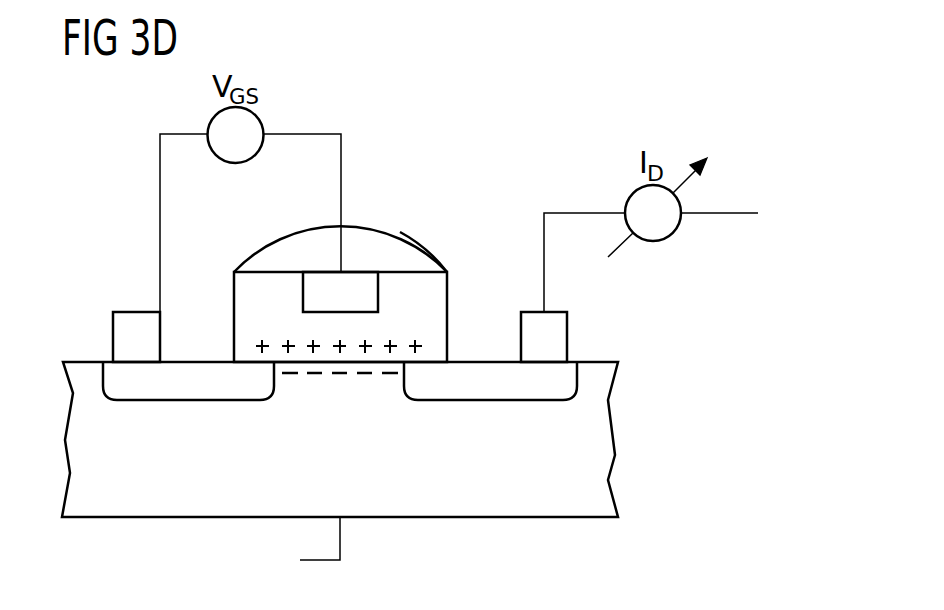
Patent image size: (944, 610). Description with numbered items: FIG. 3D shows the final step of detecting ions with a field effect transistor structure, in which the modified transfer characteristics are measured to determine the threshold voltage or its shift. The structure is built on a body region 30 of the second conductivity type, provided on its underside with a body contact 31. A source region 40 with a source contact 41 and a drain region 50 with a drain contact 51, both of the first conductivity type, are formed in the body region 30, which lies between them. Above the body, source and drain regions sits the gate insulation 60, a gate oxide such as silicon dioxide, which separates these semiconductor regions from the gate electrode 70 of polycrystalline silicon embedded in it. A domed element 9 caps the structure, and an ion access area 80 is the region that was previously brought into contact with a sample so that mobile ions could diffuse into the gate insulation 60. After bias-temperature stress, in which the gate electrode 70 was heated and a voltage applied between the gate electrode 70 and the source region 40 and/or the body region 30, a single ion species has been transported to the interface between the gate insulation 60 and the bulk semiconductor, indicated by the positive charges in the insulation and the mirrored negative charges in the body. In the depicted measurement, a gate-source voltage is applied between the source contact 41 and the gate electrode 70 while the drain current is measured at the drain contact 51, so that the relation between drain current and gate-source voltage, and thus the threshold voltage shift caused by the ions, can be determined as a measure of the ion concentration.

The passivation dome 9 is at (292, 242).
The body region 30 is at (605, 456).
The body contact 31 is at (341, 537).
The source region 40 is at (203, 372).
The source contact 41 is at (113, 337).
The drain region 50 is at (492, 370).
The drain contact 51 is at (567, 338).
The gate insulation layer 60 is at (445, 293).
The gate electrode 70 is at (303, 293).
The ion access area 80 is at (426, 269).